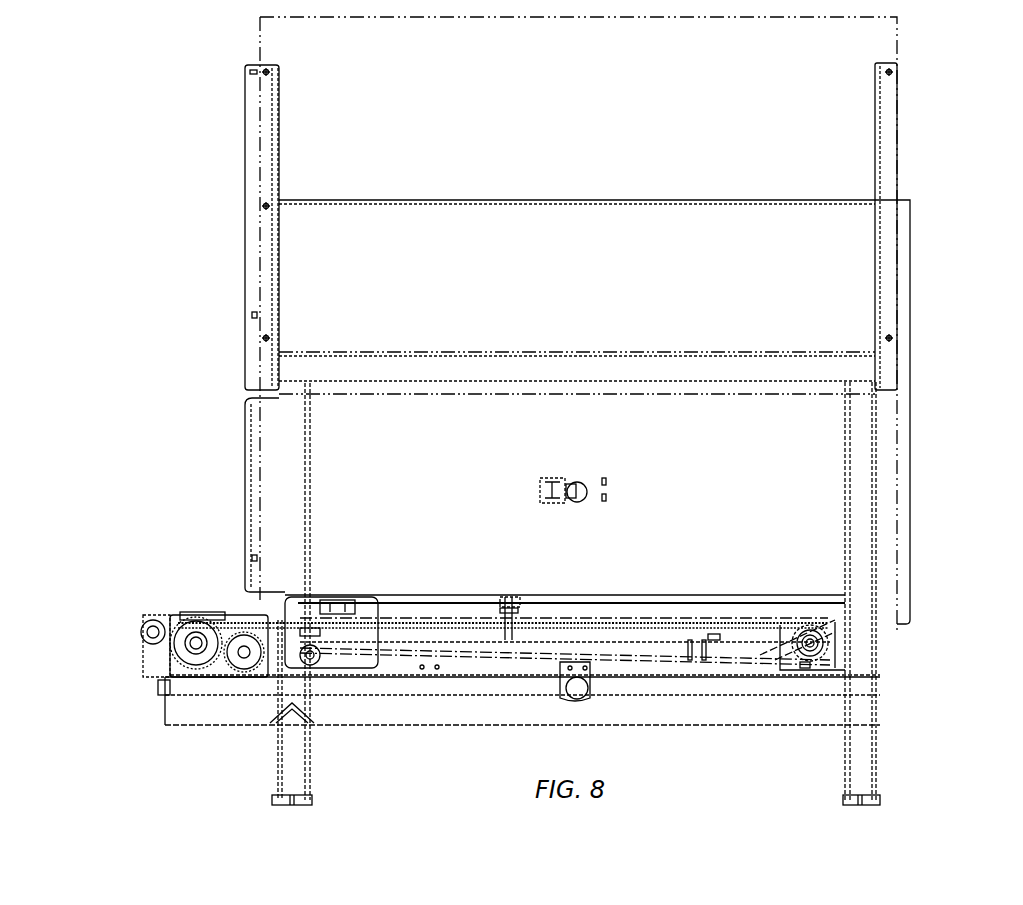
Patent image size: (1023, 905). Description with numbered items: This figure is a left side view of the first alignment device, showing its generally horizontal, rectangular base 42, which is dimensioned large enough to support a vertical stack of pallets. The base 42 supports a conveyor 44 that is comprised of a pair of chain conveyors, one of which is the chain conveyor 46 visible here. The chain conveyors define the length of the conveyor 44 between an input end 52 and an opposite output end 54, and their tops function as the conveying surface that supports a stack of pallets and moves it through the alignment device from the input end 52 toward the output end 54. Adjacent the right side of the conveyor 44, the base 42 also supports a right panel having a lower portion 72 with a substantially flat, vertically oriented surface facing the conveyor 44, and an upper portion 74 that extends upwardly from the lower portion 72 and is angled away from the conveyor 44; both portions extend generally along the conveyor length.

The base 42 is at (808, 382).
The conveyor 44 is at (780, 620).
The chain conveyor 46 is at (795, 617).
The input end 52 is at (850, 634).
The output end 54 is at (178, 625).
The right panel lower portion 72 is at (828, 480).
The right panel upper portion 74 is at (818, 245).